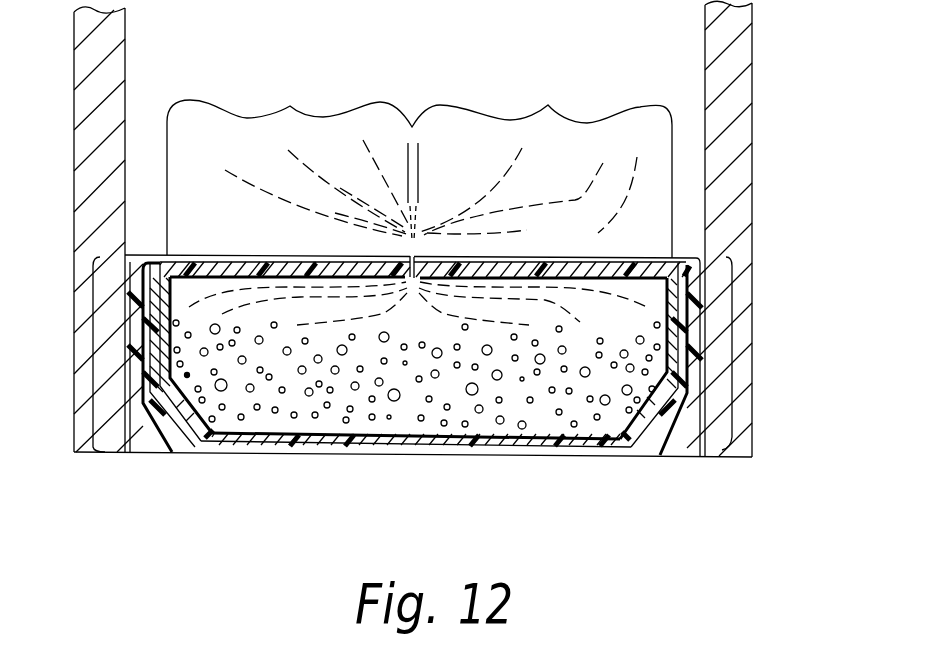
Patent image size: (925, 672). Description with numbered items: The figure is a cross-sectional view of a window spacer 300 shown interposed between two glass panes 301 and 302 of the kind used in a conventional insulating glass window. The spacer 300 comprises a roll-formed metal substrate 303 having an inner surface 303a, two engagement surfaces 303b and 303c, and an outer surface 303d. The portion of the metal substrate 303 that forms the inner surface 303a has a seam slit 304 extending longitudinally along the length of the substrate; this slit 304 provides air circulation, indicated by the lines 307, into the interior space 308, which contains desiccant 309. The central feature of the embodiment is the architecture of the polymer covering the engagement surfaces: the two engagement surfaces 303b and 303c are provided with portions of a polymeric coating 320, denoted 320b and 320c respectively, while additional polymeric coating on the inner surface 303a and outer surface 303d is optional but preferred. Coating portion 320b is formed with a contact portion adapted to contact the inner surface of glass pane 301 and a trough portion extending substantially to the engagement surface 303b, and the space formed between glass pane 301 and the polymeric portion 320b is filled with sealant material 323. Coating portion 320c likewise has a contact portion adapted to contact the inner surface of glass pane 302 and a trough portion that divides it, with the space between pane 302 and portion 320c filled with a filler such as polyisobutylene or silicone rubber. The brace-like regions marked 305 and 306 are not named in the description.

The spacer 300 is at (412, 118).
The glass pane 301 is at (127, 85).
The glass pane 302 is at (704, 105).
The metal substrate 303 is at (433, 381).
The inner surface 303a is at (210, 257).
The engagement surface 303b is at (142, 440).
The engagement surface 303c is at (693, 445).
The outer surface 303d is at (500, 446).
The seam slit 304 is at (410, 254).
The left gas flow region 305 is at (318, 155).
The right gas flow region 306 is at (528, 156).
The lines 307 is at (604, 166).
The interior space 308 is at (305, 405).
The desiccant 309 is at (597, 420).
The polymeric coating 320 is at (181, 255).
The polymeric coating portion 320b is at (92, 350).
The polymeric coating portion 320c is at (754, 365).
The sealant material 323 is at (176, 440).